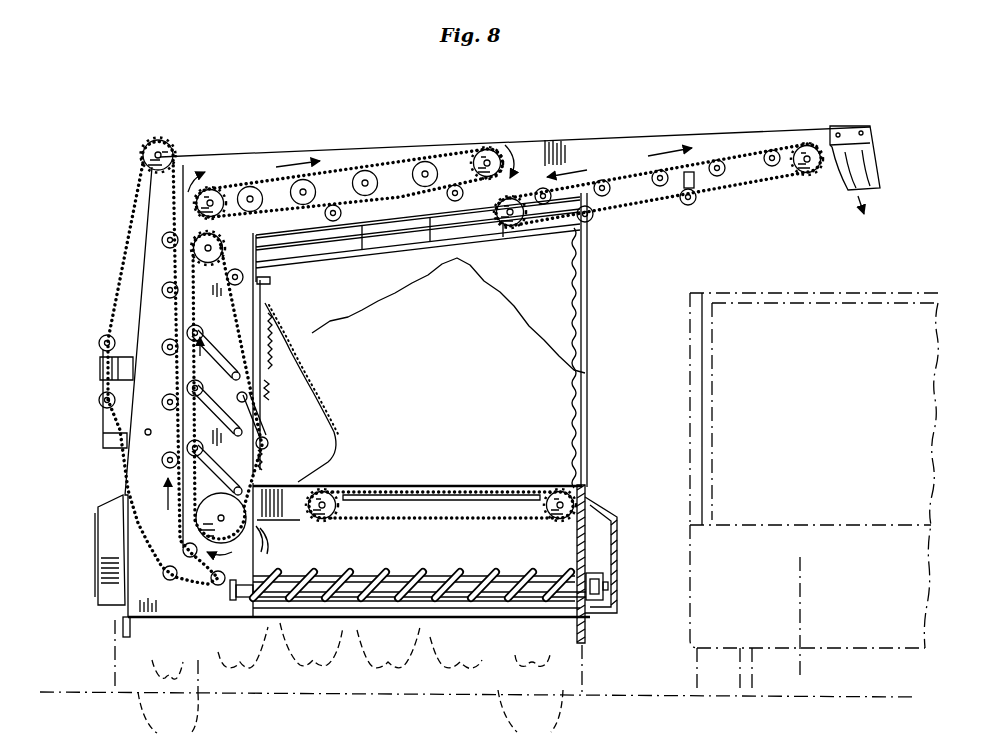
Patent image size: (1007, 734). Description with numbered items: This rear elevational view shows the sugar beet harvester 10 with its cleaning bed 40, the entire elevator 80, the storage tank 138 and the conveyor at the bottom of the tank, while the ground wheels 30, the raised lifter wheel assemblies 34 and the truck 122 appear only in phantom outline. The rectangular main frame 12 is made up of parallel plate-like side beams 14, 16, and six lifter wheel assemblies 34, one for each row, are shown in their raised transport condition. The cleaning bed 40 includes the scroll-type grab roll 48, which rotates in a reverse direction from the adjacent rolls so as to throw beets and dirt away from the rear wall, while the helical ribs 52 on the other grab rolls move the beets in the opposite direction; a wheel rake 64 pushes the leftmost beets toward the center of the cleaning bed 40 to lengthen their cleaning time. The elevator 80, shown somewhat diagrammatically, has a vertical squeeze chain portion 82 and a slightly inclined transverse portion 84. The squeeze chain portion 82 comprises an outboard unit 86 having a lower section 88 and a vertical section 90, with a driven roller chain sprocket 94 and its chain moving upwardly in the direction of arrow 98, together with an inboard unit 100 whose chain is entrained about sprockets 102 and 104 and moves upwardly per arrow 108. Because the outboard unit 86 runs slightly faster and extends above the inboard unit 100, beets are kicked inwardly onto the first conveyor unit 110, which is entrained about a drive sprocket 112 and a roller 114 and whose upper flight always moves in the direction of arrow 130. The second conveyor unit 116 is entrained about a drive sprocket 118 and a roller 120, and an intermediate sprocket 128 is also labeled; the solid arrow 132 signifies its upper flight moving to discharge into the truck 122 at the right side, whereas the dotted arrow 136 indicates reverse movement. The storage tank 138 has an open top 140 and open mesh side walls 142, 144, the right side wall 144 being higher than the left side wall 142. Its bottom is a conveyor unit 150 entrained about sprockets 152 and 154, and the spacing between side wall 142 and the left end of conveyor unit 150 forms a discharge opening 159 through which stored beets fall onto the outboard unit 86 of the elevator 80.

The sugar beet harvester 10 is at (153, 96).
The main frame 12 is at (93, 585).
The side beam 14 is at (96, 537).
The side beam 16 is at (616, 525).
The wheels 30 is at (350, 712).
The lifter wheel assemblies 34 is at (316, 674).
The cleaning bed 40 is at (389, 574).
The grab roll 48 is at (513, 578).
The helical ribs 52 is at (327, 590).
The wheel rake 64 is at (272, 547).
The elevator 80 is at (98, 282).
The vertical squeeze chain portion 82 is at (166, 261).
The transverse portion 84 is at (558, 114).
The outboard unit 86 is at (172, 319).
The lower section 88 is at (205, 583).
The vertical section 90 is at (172, 363).
The driven roller chain sprocket 94 is at (150, 142).
The arrow 98 is at (176, 493).
The inboard unit 100 is at (206, 316).
The sprocket 102 is at (238, 494).
The sprocket 104 is at (267, 320).
The arrow 108 is at (258, 400).
The first conveyor unit 110 is at (258, 168).
The drive sprocket 112 is at (212, 188).
The roller 114 is at (490, 148).
The second conveyor unit 116 is at (748, 148).
The drive sprocket 118 is at (533, 222).
The roller 120 is at (806, 174).
The truck 122 is at (722, 292).
The intermediate sprocket 128 is at (514, 188).
The arrow 130 is at (298, 160).
The solid arrow 132 is at (660, 153).
The dotted arrow 136 is at (596, 168).
The storage tank 138 is at (591, 300).
The open top 140 is at (265, 277).
The side wall 142 is at (448, 315).
The side wall 144 is at (588, 318).
The conveyor unit 150 is at (495, 528).
The sprocket 152 is at (330, 492).
The sprocket 154 is at (556, 492).
The discharge opening 159 is at (320, 470).